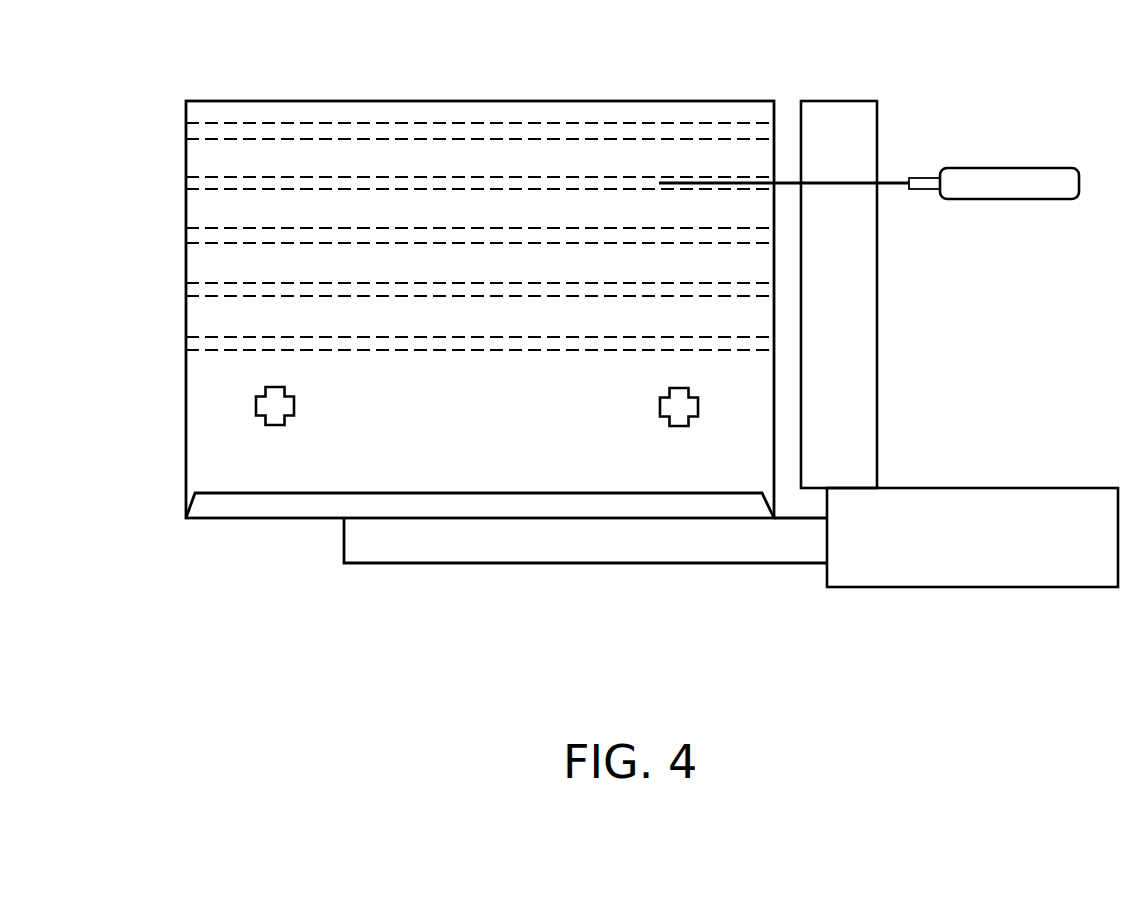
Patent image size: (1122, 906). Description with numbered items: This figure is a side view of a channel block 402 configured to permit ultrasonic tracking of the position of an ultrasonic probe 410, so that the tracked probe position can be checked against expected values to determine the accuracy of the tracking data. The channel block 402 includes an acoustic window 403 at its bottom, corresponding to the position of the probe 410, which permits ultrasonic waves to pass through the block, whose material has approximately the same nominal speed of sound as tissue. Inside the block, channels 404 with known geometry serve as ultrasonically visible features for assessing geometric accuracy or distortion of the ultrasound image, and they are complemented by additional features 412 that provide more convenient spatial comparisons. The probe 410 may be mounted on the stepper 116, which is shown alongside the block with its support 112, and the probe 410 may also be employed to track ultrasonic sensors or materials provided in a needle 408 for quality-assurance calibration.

The channel block 402 is at (308, 92).
The channels 404 is at (188, 182).
The acoustic window 403 is at (221, 508).
The ultrasonic probe 410 is at (620, 550).
The additional features 412 is at (295, 405).
The support column 112 is at (866, 321).
The stepper 116 is at (968, 575).
The needle 408 is at (1007, 176).